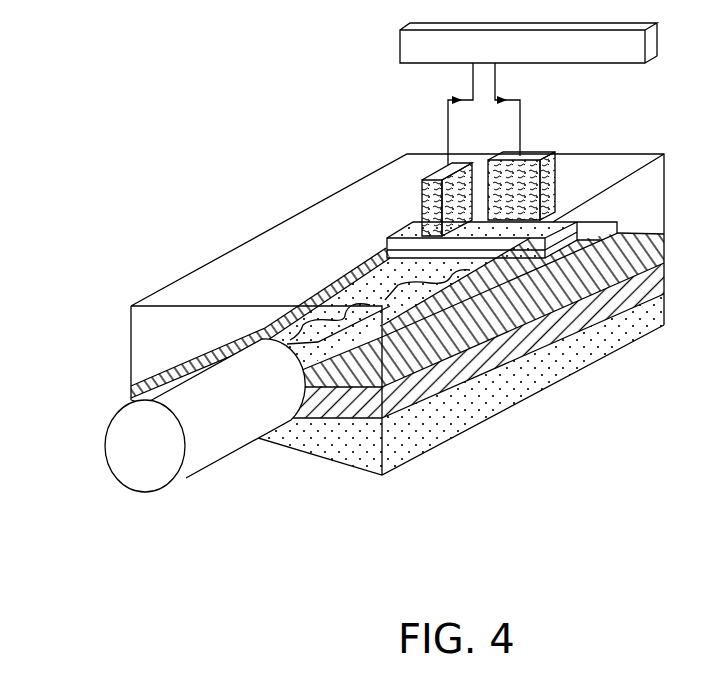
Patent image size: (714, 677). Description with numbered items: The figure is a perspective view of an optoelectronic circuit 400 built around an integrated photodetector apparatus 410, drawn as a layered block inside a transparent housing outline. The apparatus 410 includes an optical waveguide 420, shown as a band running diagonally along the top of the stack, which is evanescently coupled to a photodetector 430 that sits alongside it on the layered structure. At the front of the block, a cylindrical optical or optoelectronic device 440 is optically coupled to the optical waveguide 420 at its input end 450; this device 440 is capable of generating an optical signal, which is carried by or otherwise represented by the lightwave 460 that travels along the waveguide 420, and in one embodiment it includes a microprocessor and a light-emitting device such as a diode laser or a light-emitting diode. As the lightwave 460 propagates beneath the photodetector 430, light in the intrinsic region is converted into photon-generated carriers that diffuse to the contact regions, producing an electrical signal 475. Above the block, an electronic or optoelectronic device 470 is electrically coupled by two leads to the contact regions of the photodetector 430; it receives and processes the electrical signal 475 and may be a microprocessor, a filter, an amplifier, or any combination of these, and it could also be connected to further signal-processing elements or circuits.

The optoelectronic circuit 400 is at (118, 215).
The integrated photodetector apparatus 410 is at (508, 437).
The optical waveguide 420 is at (378, 275).
The photodetector 430 is at (523, 256).
The optical or optoelectronic device 440 is at (107, 425).
The input end 450 is at (308, 434).
The lightwave 460 is at (275, 335).
The electronic or optoelectronic device 470 is at (400, 40).
The electrical signal 475 is at (450, 99).